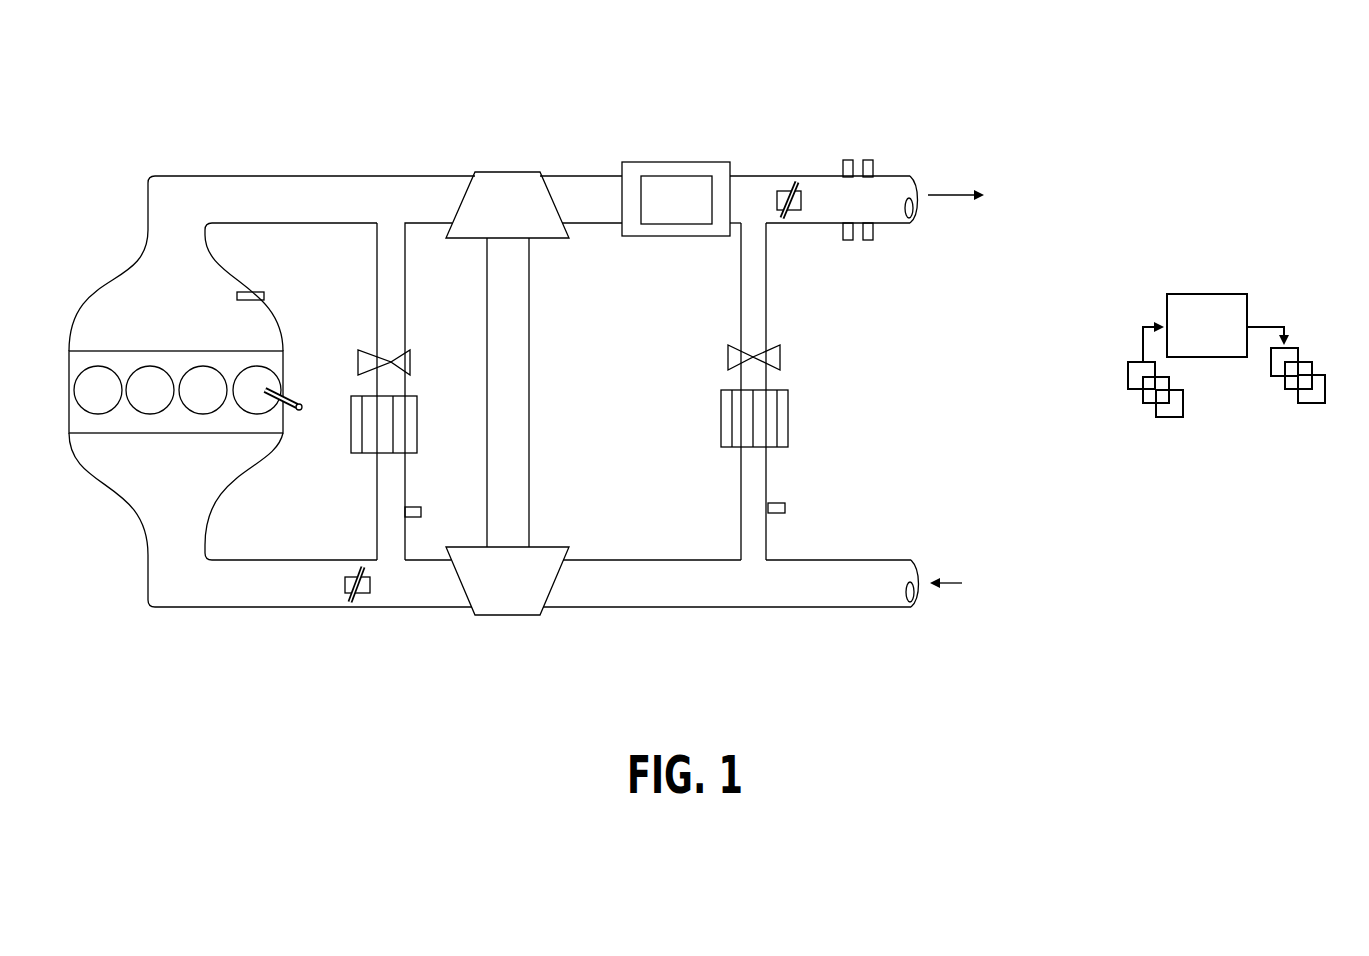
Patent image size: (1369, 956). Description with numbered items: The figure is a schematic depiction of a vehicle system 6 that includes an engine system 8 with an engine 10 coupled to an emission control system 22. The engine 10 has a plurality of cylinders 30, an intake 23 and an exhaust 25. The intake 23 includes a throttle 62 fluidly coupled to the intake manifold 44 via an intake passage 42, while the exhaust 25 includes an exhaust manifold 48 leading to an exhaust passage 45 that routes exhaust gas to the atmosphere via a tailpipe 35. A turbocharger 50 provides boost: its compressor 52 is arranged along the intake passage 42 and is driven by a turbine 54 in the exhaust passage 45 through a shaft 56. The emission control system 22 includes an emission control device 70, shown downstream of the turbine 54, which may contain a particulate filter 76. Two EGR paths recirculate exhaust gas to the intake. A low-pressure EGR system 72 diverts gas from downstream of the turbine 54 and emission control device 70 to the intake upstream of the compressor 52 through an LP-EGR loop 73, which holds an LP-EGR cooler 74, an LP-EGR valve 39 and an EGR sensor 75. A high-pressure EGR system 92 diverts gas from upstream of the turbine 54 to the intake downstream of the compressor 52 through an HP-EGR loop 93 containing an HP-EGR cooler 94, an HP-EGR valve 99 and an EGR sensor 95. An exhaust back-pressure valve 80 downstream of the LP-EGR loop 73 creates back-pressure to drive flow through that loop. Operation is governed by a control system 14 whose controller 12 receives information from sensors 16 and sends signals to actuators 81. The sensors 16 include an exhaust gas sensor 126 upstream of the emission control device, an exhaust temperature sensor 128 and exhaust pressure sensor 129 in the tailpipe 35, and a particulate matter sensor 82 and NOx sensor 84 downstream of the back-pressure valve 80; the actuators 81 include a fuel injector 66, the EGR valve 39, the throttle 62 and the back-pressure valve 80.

The vehicle system 6 is at (972, 110).
The engine system 8 is at (105, 165).
The engine 10 is at (158, 350).
The controller 12 is at (1207, 325).
The control system 14 is at (1098, 478).
The sensors 16 is at (1118, 425).
The emission control system 22 is at (722, 102).
The intake 23 is at (182, 664).
The exhaust 25 is at (208, 133).
The cylinders 30 is at (94, 367).
The tailpipe 35 is at (903, 176).
The LP-EGR valve 39 is at (780, 358).
The intake passage 42 is at (875, 558).
The intake manifold 44 is at (188, 486).
The exhaust passage 45 is at (240, 176).
The exhaust manifold 48 is at (188, 300).
The turbocharger 50 is at (549, 366).
The compressor 52 is at (510, 615).
The turbine 54 is at (513, 172).
The shaft 56 is at (530, 420).
The throttle 62 is at (342, 592).
The fuel injector 66 is at (289, 393).
The emission control device 70 is at (685, 162).
The low-pressure EGR system 72 is at (843, 360).
The LP-EGR loop 73 is at (741, 313).
The LP-EGR cooler 74 is at (788, 418).
The EGR sensor 75 is at (778, 500).
The particulate filter 76 is at (687, 211).
The exhaust back-pressure valve 80 is at (802, 198).
The actuators 81 is at (1261, 408).
The particulate matter sensor 82 is at (847, 160).
The NOx sensor 84 is at (847, 240).
The high-pressure EGR system 92 is at (420, 312).
The HP-EGR loop 93 is at (377, 315).
The HP-EGR cooler 94 is at (418, 425).
The EGR sensor 95 is at (415, 505).
The HP-EGR valve 99 is at (410, 360).
The exhaust gas sensor 126 is at (243, 292).
The exhaust temperature sensor 128 is at (868, 240).
The exhaust pressure sensor 129 is at (868, 160).